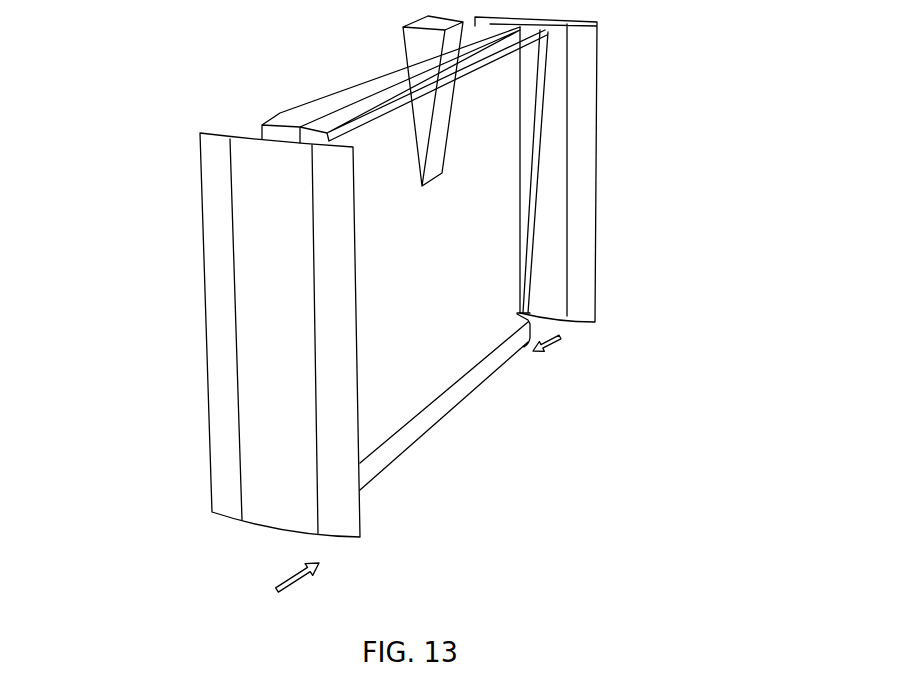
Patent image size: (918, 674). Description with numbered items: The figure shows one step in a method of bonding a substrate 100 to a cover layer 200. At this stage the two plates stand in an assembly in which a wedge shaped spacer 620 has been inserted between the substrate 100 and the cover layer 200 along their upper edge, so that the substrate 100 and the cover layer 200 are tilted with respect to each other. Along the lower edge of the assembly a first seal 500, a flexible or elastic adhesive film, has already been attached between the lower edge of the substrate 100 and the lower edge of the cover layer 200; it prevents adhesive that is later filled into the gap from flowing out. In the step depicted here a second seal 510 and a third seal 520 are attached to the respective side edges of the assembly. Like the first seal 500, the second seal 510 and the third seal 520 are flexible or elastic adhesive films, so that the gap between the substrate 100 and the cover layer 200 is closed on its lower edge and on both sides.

The substrate 100 is at (275, 118).
The cover layer 200 is at (535, 53).
The first seal 500 is at (412, 430).
The second seal 510 is at (555, 170).
The third seal 520 is at (263, 340).
The wedge shaped spacer 620 is at (428, 37).